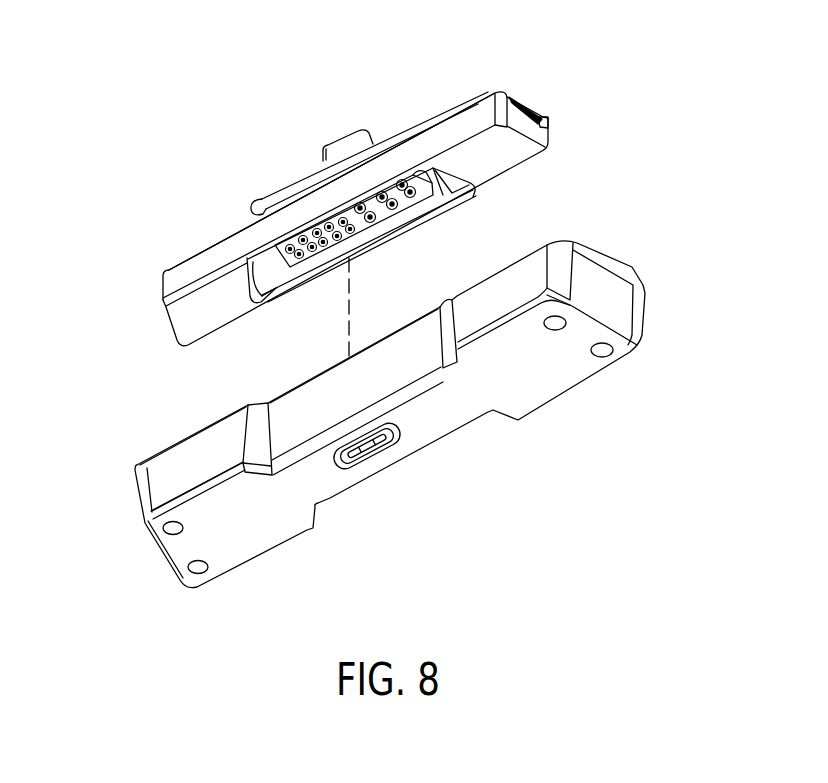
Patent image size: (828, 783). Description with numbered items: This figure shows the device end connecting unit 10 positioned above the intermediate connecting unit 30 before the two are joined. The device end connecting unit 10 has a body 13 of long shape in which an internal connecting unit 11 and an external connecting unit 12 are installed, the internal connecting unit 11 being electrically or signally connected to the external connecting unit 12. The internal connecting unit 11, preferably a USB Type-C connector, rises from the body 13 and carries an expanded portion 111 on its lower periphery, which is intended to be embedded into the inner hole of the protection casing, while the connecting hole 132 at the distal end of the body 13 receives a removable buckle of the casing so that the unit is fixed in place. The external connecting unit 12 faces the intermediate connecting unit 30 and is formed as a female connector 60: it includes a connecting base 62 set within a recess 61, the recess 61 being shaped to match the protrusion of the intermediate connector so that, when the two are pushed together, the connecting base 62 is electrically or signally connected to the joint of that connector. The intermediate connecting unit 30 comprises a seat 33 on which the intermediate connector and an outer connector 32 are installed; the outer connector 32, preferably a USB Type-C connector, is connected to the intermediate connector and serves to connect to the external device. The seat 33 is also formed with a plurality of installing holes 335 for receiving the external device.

The device end connecting unit 10 is at (336, 217).
The internal connecting unit 11 is at (346, 140).
The expanded portion 111 is at (293, 183).
The body 13 is at (234, 236).
The connecting hole 132 is at (527, 112).
The external connecting unit 12 is at (375, 252).
The female connector 60 is at (383, 238).
The recess 61 is at (284, 276).
The connecting base 62 is at (322, 248).
The intermediate connecting unit 30 is at (376, 414).
The outer connector 32 is at (385, 458).
The seat 33 is at (542, 400).
The installing hole 335 is at (609, 354).